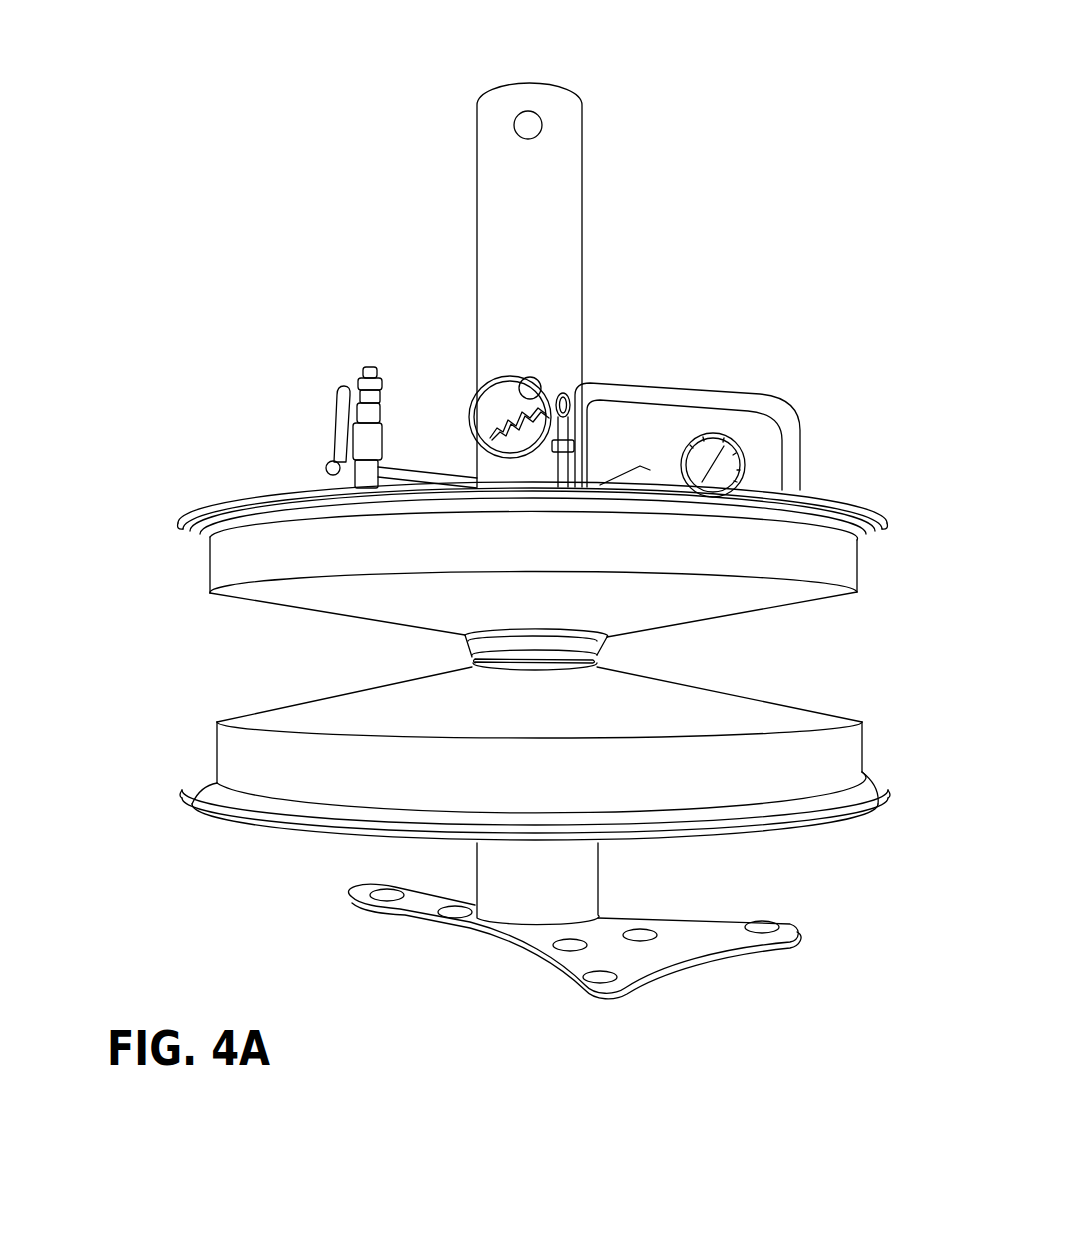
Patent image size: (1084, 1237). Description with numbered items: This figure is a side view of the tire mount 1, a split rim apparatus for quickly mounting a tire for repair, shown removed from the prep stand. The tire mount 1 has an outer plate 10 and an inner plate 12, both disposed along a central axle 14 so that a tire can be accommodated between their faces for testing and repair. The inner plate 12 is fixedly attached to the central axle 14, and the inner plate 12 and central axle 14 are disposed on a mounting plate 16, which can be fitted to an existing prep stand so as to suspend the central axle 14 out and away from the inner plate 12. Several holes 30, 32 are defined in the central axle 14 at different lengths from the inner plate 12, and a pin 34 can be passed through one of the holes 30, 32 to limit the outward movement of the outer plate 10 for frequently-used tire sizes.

The tire mount 1 is at (727, 125).
The outer plate 10 is at (278, 495).
The inner plate 12 is at (272, 827).
The central axle 14 is at (565, 222).
The mounting plate 16 is at (705, 927).
The hole 30 is at (496, 392).
The hole 32 is at (516, 128).
The pin 34 is at (524, 378).